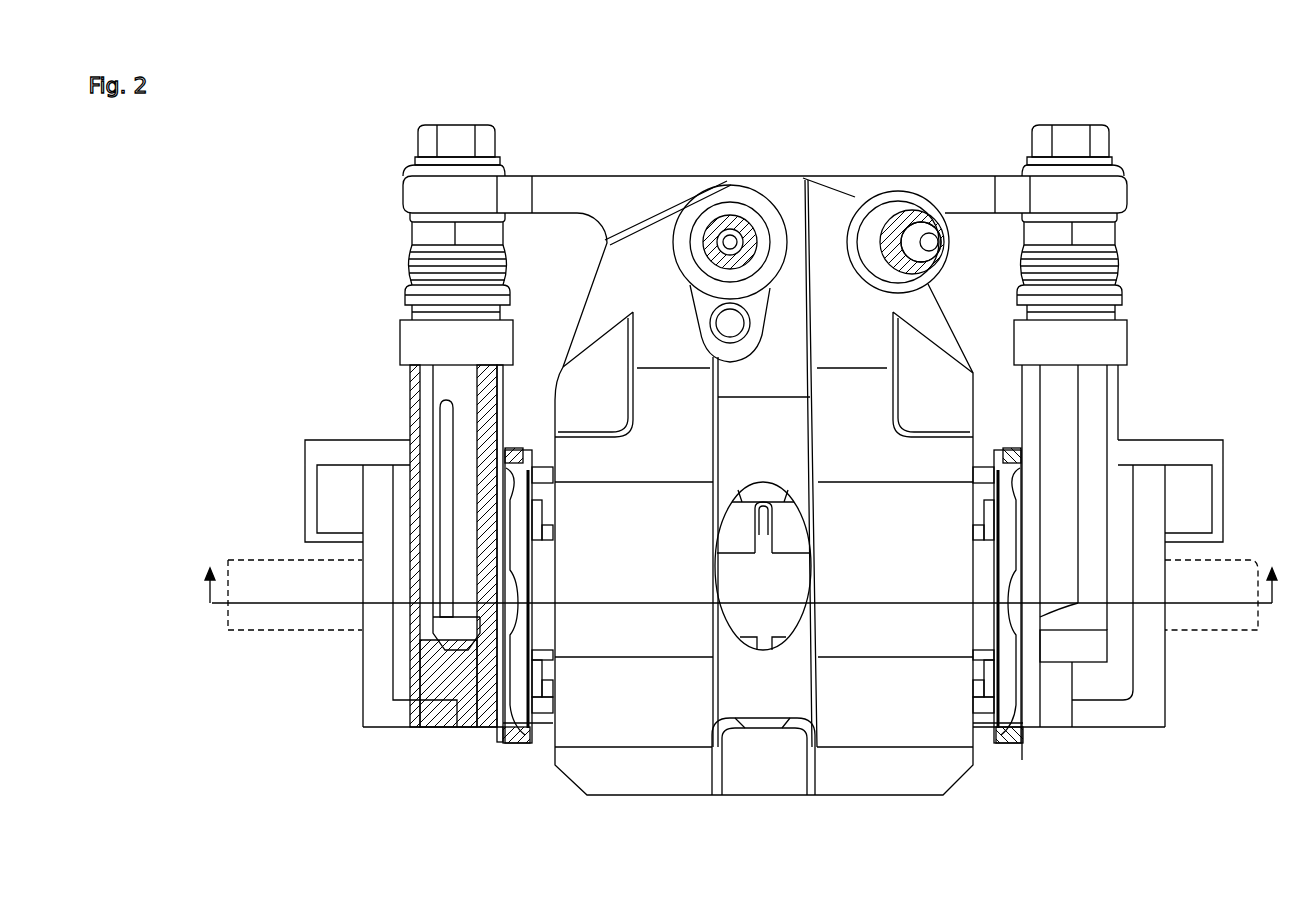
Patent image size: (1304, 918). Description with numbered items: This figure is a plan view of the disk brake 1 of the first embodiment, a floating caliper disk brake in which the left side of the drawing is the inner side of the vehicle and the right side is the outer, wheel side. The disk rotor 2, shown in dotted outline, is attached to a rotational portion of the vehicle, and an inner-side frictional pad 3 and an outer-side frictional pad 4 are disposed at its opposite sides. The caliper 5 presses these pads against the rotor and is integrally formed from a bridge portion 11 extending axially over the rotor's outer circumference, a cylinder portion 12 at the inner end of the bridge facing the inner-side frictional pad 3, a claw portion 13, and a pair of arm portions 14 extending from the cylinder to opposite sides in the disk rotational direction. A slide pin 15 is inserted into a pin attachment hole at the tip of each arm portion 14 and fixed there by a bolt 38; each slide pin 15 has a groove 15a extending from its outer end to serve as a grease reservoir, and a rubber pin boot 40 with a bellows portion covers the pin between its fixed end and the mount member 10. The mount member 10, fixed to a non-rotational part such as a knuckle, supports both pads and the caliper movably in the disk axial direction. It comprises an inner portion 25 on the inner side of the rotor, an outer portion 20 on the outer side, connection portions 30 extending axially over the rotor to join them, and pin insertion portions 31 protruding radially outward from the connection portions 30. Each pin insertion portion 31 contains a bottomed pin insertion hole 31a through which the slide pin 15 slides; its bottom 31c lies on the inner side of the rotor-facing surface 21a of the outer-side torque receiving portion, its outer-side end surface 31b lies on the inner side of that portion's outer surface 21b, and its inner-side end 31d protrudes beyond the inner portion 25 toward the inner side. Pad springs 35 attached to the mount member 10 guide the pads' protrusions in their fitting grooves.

The disk brake 1 is at (1185, 183).
The disk rotor 2 is at (1225, 638).
The inner-side frictional pad 3 is at (980, 517).
The outer-side frictional pad 4 is at (1030, 705).
The caliper 5 is at (722, 170).
The mount member 10 is at (1175, 681).
The bridge portion 11 is at (640, 573).
The cylinder portion 12 is at (828, 210).
The claw portion 13 is at (690, 796).
The arm portion 14 is at (563, 190).
The slide pin 15 is at (438, 380).
The groove 15a is at (440, 500).
The outer portion 20 is at (543, 740).
The inner-side surface of outer-side torque receiving portion 21a is at (415, 655).
The outer surface of outer-side torque receiving portion 21b is at (428, 727).
The inner portion 25 is at (505, 595).
The connection portion 30 is at (378, 680).
The pin insertion portion 31 is at (398, 338).
The pin insertion hole 31a is at (413, 628).
The outer-side end surface 31b is at (1128, 677).
The bottom 31c is at (417, 693).
The inner-side end 31d is at (407, 322).
The pad spring 35 is at (503, 719).
The bolt 38 is at (455, 145).
The rubber pin boot 40 is at (412, 258).